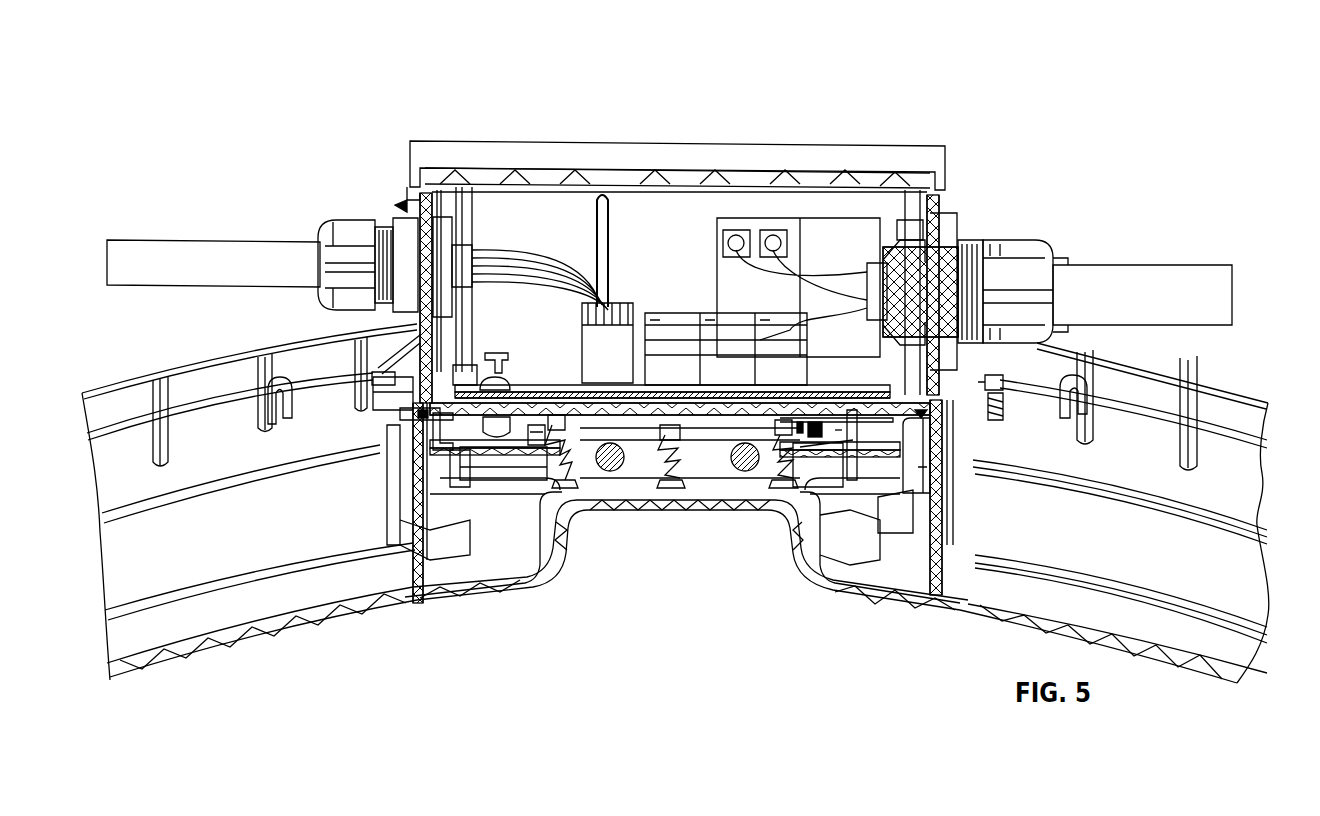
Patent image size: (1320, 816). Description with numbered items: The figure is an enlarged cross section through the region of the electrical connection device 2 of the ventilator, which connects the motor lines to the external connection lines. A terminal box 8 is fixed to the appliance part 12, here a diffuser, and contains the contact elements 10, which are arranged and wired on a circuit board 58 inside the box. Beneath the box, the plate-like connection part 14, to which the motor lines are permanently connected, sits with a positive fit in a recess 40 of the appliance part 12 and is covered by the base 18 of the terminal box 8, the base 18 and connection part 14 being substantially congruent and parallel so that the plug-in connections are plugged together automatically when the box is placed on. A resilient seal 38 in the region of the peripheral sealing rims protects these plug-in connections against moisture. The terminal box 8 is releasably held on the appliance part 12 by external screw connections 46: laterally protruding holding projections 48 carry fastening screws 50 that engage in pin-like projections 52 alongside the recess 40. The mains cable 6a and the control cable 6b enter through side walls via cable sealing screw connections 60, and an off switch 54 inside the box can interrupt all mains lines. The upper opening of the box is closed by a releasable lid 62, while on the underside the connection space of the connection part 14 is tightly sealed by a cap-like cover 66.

The electrical connection device 2 is at (397, 112).
The mains cable 6a is at (1173, 288).
The control cable 6b is at (222, 255).
The terminal box 8 is at (636, 319).
The contact elements 10 is at (637, 308).
The appliance part 12 is at (338, 612).
The connection part 14 is at (548, 468).
The base 18 is at (925, 467).
The resilient seal 38 is at (415, 418).
The recess 40 is at (415, 445).
The external screw connections 46 is at (383, 368).
The holding projections 48 is at (990, 378).
The fastening screws 50 is at (1000, 410).
The pin-like projections 52 is at (383, 403).
The off switch 54 is at (862, 240).
The circuit board 58 is at (548, 372).
The cable sealing screw connection 60 is at (1020, 250).
The lid 62 is at (826, 158).
The cap-like cover 66 is at (535, 435).